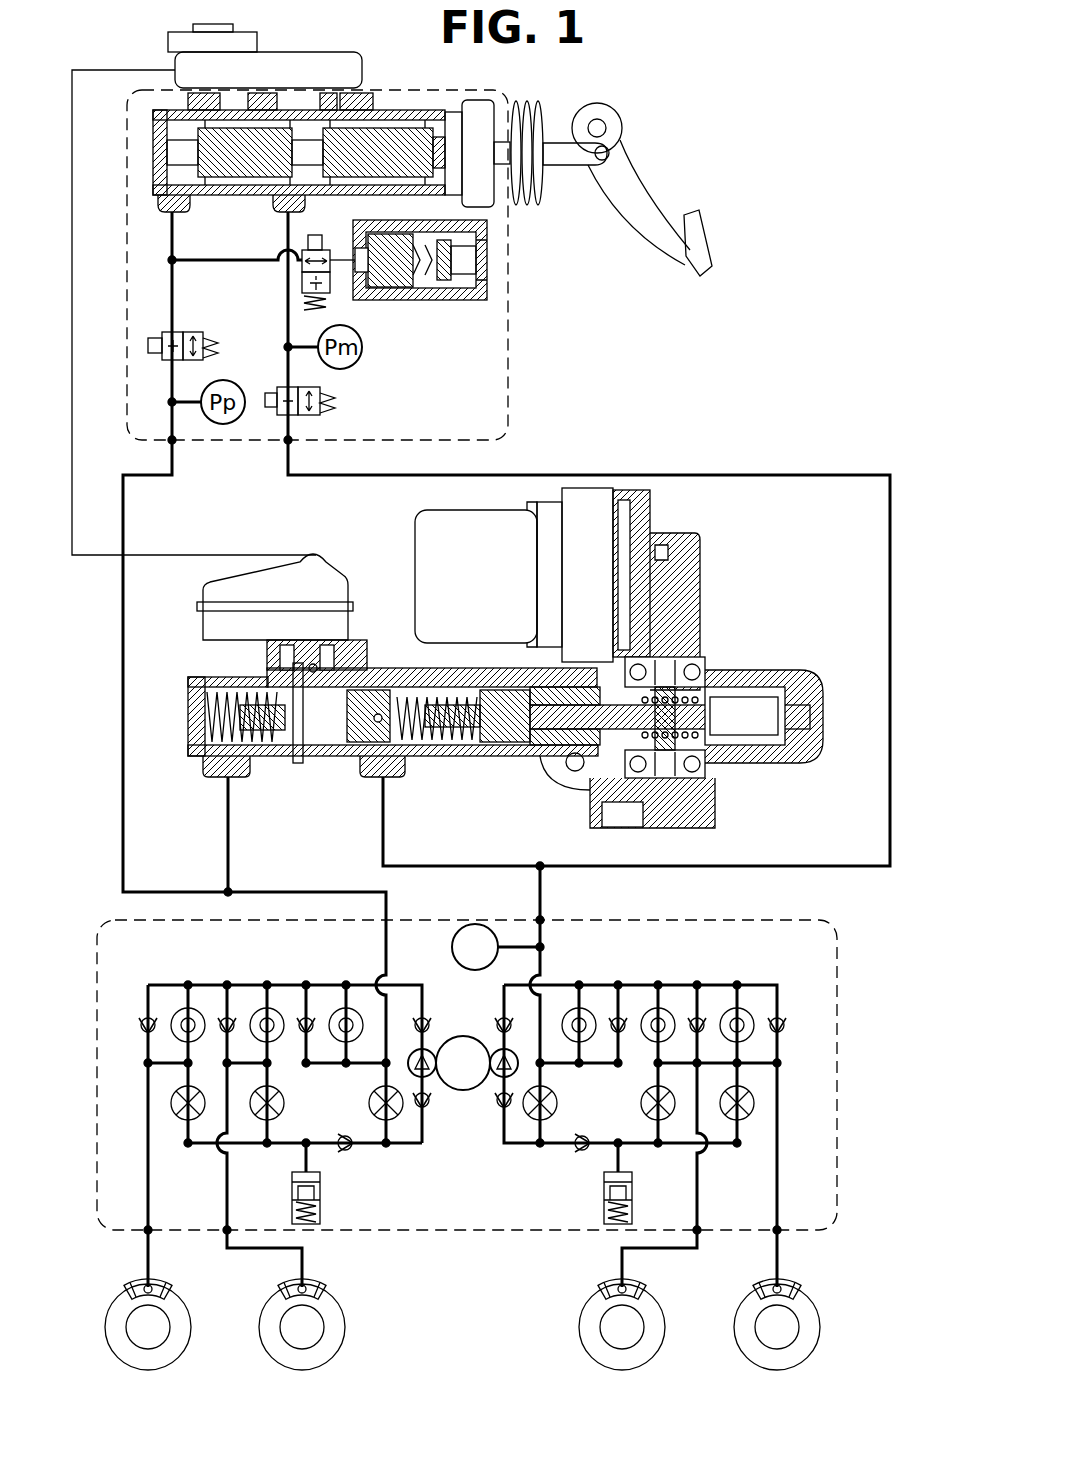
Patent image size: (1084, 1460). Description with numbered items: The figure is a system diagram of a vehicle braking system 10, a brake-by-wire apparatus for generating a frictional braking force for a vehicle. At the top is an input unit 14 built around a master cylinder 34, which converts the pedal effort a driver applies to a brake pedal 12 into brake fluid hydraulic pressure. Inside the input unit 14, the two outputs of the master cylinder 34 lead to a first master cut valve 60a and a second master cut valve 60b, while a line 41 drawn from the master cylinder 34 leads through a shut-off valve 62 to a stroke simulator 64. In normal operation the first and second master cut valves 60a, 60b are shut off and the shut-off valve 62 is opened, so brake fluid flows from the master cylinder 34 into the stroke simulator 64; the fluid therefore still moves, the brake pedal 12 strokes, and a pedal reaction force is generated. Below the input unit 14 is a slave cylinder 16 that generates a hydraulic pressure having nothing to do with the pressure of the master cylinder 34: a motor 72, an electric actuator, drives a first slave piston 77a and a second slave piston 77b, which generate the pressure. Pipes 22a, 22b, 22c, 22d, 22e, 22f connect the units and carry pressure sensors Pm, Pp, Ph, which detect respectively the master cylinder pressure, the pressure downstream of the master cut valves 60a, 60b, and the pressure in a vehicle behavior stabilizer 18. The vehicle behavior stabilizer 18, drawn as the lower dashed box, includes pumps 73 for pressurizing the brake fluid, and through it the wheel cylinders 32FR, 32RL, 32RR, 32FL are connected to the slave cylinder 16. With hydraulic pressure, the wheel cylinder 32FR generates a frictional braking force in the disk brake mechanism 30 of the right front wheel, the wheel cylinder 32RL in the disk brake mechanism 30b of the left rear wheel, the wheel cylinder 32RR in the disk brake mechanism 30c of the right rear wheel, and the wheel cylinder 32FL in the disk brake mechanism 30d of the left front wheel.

The vehicle braking system 10 is at (642, 74).
The brake pedal 12 is at (713, 238).
The input unit 14 is at (510, 330).
The slave cylinder 16 is at (505, 631).
The vehicle behavior stabilizer 18 is at (715, 920).
The pipe 22a is at (892, 580).
The pipe 22b is at (428, 866).
The pipe 22c is at (543, 890).
The pipe 22d is at (121, 660).
The pipe 22e is at (226, 845).
The pipe 22f is at (290, 892).
The disk brake mechanism 30 is at (815, 1353).
The disk brake mechanism 30b is at (660, 1353).
The disk brake mechanism 30c is at (340, 1353).
The disk brake mechanism 30d is at (186, 1353).
The wheel cylinder 32FL is at (174, 1296).
The wheel cylinder 32RR is at (328, 1296).
The wheel cylinder 32RL is at (648, 1296).
The wheel cylinder 32FR is at (803, 1296).
The master cylinder 34 is at (395, 102).
The fluid passage 41 is at (248, 262).
The first master cut valve 60a is at (316, 382).
The second master cut valve 60b is at (188, 332).
The shut-off valve 62 is at (324, 250).
The stroke simulator 64 is at (490, 243).
The motor 72 is at (490, 590).
The pump 73 is at (438, 1080).
The first slave piston 77a is at (522, 768).
The second slave piston 77b is at (356, 750).